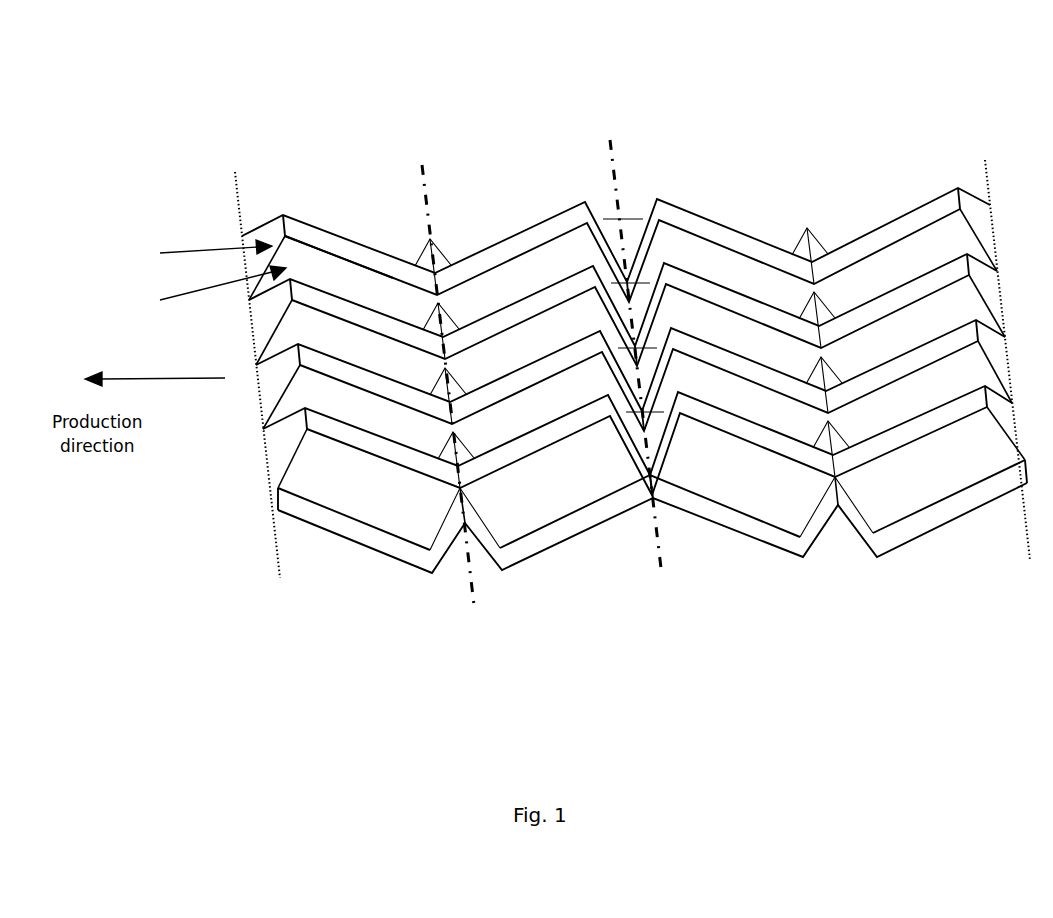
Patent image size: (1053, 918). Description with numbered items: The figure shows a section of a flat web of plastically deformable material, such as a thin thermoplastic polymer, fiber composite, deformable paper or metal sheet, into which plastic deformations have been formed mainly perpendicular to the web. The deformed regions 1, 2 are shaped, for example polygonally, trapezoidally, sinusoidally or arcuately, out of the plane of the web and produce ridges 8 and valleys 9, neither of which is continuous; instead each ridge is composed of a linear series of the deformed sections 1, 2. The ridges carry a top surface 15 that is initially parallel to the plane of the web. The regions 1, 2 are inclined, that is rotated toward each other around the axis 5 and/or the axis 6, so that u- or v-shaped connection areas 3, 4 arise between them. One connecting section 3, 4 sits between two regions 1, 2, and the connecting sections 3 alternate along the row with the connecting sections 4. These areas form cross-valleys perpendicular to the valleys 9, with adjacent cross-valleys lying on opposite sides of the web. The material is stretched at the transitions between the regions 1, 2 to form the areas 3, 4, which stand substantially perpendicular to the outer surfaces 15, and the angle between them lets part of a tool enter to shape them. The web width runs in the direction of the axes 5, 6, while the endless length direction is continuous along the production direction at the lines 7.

The plastic deformation region 1 is at (345, 222).
The plastic deformation region 2 is at (513, 213).
The connection area 3 is at (633, 281).
The connection area 4 is at (477, 530).
The axis 5 is at (416, 158).
The axis 6 is at (660, 550).
The line 7 is at (277, 555).
The ridge 8 is at (204, 255).
The valley 9 is at (211, 297).
The top surface 15 is at (393, 267).